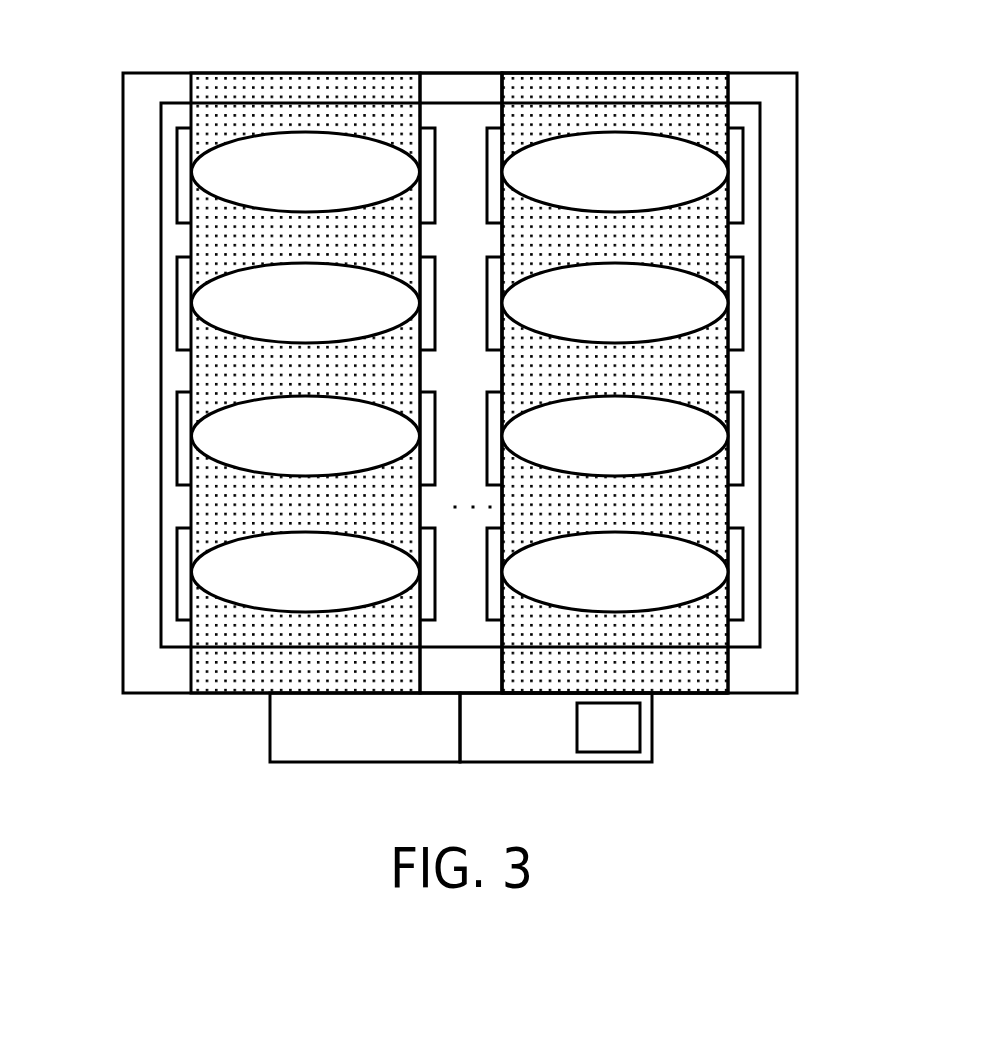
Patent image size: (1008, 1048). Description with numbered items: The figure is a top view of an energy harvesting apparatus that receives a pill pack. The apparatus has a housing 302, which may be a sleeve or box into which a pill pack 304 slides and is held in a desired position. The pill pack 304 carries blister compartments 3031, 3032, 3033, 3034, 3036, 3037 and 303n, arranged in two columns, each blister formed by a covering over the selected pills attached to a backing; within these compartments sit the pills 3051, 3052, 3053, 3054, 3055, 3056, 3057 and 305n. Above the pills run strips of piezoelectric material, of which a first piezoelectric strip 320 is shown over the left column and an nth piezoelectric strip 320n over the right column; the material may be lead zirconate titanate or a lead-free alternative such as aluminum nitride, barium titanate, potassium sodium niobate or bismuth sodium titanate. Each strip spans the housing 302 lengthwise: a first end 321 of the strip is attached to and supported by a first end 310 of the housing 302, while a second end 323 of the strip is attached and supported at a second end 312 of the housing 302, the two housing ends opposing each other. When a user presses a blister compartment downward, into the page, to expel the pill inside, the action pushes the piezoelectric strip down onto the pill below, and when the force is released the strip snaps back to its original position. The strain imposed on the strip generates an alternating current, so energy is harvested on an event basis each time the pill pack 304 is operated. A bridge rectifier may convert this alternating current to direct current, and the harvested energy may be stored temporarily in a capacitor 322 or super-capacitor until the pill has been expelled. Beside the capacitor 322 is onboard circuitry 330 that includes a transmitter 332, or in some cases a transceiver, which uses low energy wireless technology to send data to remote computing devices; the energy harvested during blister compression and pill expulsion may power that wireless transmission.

The housing 302 is at (798, 367).
The pill pack 304 is at (758, 505).
The first end of the housing 310 is at (550, 73).
The second end of the housing 312 is at (725, 693).
The piezoelectric strip 320 is at (248, 83).
The nth piezoelectric strip 320n is at (712, 660).
The first end of the piezoelectric strip 321 is at (680, 83).
The second end of the piezoelectric strip 323 is at (693, 678).
The first blister compartment 3031 is at (185, 163).
The second blister compartment 3032 is at (185, 297).
The third blister compartment 3033 is at (185, 433).
The fourth blister compartment 3034 is at (185, 573).
The sixth blister compartment 3036 is at (737, 297).
The seventh blister compartment 3037 is at (737, 433).
The nth blister compartment 303n is at (737, 578).
The first pill 3051 is at (330, 187).
The second pill 3052 is at (330, 318).
The third pill 3053 is at (330, 451).
The fourth pill 3054 is at (330, 587).
The fifth pill 3055 is at (650, 187).
The sixth pill 3056 is at (650, 318).
The seventh pill 3057 is at (650, 451).
The nth pill 305n is at (652, 587).
The capacitor 322 is at (385, 742).
The onboard circuitry 330 is at (540, 742).
The transmitter 332 is at (632, 742).